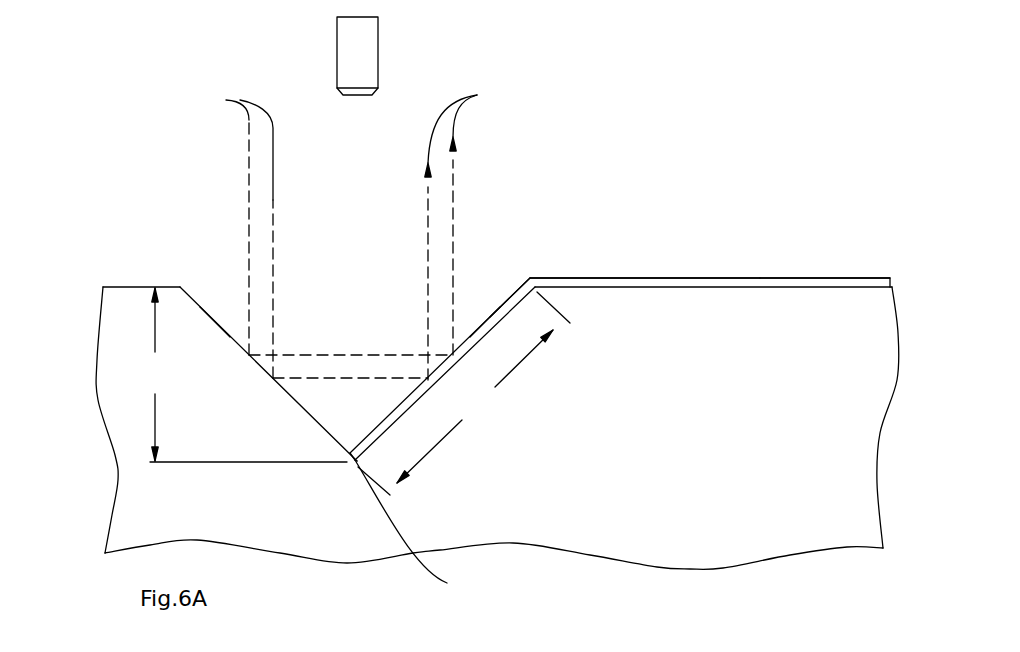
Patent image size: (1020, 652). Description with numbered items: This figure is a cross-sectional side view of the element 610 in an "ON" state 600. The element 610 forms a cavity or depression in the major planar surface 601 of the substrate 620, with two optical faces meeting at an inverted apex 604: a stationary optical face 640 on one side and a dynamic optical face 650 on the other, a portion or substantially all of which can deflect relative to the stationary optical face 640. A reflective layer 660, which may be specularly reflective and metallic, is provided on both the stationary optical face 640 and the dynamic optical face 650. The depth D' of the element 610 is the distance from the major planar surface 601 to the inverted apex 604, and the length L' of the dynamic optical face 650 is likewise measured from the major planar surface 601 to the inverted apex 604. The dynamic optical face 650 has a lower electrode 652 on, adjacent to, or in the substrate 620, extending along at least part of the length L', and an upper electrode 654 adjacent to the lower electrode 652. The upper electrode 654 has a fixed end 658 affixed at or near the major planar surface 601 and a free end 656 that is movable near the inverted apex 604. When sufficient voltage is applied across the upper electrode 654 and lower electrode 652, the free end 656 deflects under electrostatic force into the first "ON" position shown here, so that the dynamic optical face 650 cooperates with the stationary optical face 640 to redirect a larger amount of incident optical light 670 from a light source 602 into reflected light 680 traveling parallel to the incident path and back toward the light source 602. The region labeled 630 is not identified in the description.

The "ON" state 600 is at (133, 218).
The major planar surface 601 is at (113, 285).
The light source 602 is at (380, 52).
The inverted apex 604 is at (447, 583).
The element 610 is at (365, 320).
The substrate 620 is at (728, 462).
The surface layer 630 is at (802, 278).
The stationary optical face 640 is at (202, 307).
The dynamic optical face 650 is at (527, 278).
The lower electrode 652 is at (410, 417).
The upper electrode 654 is at (510, 290).
The free end 656 is at (347, 452).
The fixed end 658 is at (662, 279).
The reflective layer 660 is at (228, 325).
The incident optical light 670 is at (240, 100).
The reflected light 680 is at (470, 96).